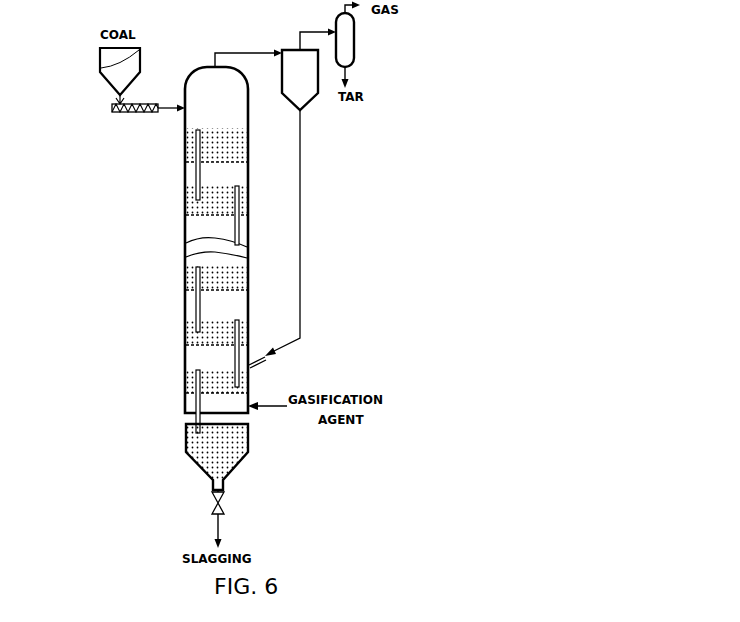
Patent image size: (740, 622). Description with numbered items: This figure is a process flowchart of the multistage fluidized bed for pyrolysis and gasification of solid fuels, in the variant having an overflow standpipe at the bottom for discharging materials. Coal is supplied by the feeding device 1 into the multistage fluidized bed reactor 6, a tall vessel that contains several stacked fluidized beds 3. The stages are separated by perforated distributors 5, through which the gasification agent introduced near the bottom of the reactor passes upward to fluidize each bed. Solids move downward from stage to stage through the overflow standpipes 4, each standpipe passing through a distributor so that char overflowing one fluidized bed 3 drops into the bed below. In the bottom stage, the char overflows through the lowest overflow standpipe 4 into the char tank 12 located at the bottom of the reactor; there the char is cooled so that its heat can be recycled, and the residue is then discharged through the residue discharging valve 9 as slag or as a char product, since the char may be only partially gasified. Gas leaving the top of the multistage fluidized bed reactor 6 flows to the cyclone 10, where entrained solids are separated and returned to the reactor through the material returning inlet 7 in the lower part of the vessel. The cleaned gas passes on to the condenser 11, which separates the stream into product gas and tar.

The feeding device 1 is at (112, 106).
The fluidized beds 3 is at (183, 100).
The overflow standpipes 4 is at (197, 134).
The perforated distributors 5 is at (249, 161).
The multistage fluidized bed reactor 6 is at (205, 68).
The material returning inlet 7 is at (258, 362).
The residue discharging valve 9 is at (213, 508).
The cyclone 10 is at (283, 51).
The condenser 11 is at (336, 23).
The char tank 12 is at (188, 437).